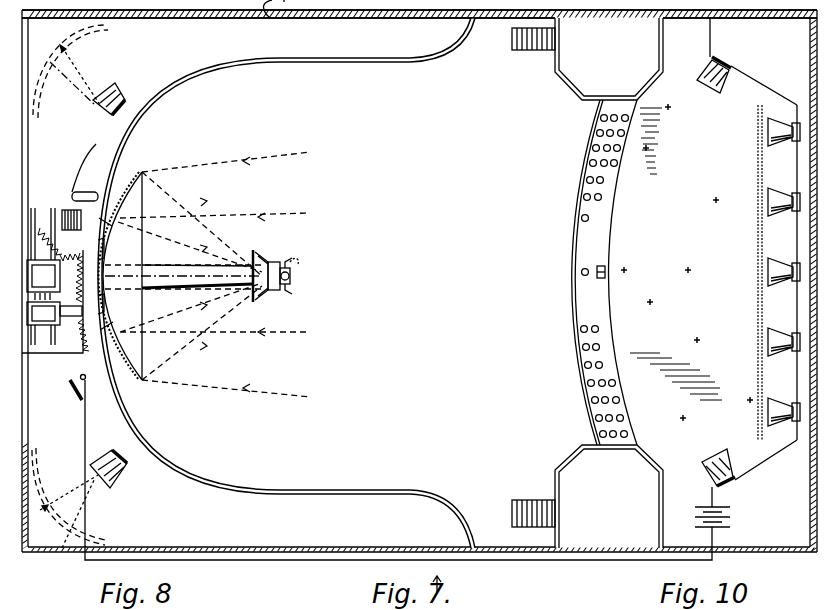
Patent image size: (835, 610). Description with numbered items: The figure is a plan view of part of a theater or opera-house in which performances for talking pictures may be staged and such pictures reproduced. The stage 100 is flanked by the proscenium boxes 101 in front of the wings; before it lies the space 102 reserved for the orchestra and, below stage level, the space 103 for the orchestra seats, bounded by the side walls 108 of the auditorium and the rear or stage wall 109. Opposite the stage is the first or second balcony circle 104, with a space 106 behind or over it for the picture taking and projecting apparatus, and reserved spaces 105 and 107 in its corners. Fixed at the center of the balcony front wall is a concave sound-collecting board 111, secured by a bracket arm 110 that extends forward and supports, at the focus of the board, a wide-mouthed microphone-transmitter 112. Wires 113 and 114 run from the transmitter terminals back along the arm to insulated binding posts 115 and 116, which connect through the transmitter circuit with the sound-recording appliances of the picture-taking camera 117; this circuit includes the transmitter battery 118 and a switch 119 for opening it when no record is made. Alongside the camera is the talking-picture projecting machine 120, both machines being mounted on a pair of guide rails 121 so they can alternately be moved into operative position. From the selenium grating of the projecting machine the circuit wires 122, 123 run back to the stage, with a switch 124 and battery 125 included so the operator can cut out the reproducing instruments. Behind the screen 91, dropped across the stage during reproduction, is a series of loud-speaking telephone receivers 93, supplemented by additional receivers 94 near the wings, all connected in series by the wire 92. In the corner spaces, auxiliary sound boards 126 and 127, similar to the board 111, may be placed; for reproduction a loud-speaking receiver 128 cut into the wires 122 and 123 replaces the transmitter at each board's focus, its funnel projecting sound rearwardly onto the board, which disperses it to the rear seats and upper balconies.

The screen 91 is at (757, 304).
The wire 92 is at (768, 484).
The loud-speaking telephone receivers 93 is at (784, 277).
The additional receivers 94 is at (742, 462).
The stage 100 is at (687, 262).
The proscenium boxes 101 is at (587, 283).
The orchestra space 102 is at (647, 272).
The orchestra seats space 103 is at (437, 274).
The balcony circle 104 is at (286, 283).
The reserved corner space 105 is at (69, 71).
The apparatus space 106 is at (52, 312).
The reserved corner space 107 is at (67, 499).
The side walls 108 is at (247, 540).
The rear or stage wall 109 is at (810, 510).
The bracket arm 110 is at (178, 272).
The concave sound-collecting board 111 is at (105, 240).
The wide-mouthed microphone-transmitter 112 is at (268, 258).
The transmitter wire 113 is at (300, 262).
The transmitter wire 114 is at (294, 292).
The insulated binding post 115 is at (61, 232).
The insulated binding post 116 is at (74, 321).
The picture-taking camera 117 is at (55, 277).
The transmitter battery 118 is at (99, 164).
The switch 119 is at (82, 192).
The talking-picture projecting machine 120 is at (43, 323).
The guide rails 121 is at (41, 219).
The circuit wire 122 is at (44, 160).
The circuit wire 123 is at (84, 422).
The switch 124 is at (72, 396).
The battery 125 is at (730, 517).
The auxiliary sound board 126 is at (72, 47).
The auxiliary sound board 127 is at (46, 494).
The loud-speaking telephone receiver 128 is at (135, 480).